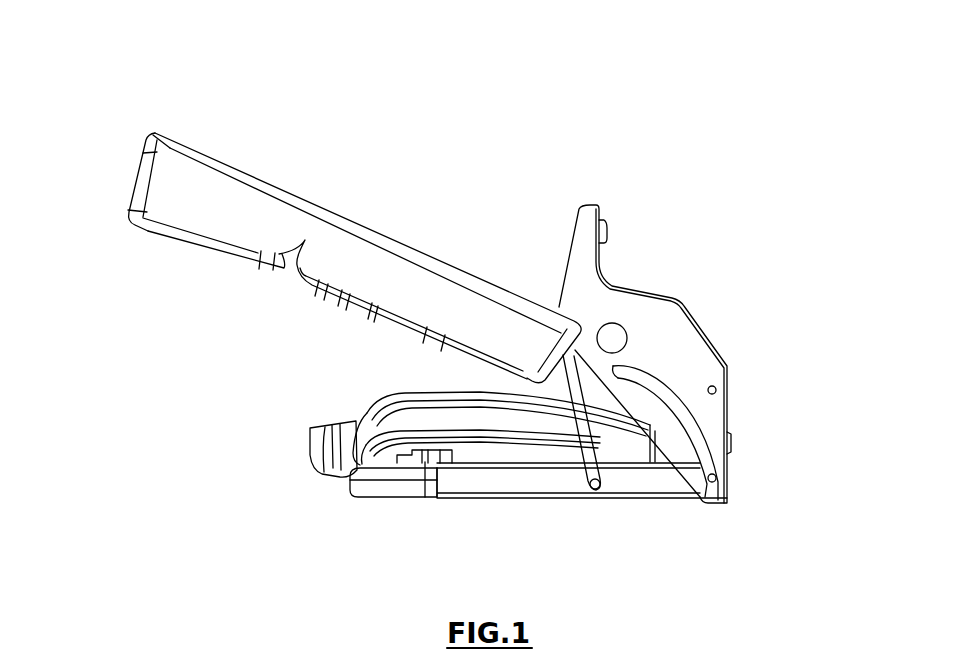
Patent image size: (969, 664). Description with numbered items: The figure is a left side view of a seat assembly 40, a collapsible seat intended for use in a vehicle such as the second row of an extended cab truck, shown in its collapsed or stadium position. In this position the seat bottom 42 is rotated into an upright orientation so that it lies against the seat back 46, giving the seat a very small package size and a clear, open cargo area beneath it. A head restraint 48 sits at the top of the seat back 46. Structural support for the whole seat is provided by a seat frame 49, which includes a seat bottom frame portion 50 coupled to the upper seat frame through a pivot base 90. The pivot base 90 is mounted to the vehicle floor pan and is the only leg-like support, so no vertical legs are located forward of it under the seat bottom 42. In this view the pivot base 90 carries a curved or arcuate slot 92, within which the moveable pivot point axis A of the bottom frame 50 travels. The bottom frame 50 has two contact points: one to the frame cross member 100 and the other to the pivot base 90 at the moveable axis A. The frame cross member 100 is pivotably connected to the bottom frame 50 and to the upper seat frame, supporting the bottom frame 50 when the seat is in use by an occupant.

The seat assembly 40 is at (298, 148).
The seat bottom 42 is at (363, 420).
The seat back 46 is at (378, 227).
The head restraint 48 is at (152, 136).
The seat frame 49 is at (382, 487).
The seat bottom frame portion 50 is at (355, 493).
The pivot base 90 is at (663, 293).
The slot 92 is at (682, 395).
The frame cross member 100 is at (585, 440).
The moveable pivot point axis A is at (713, 493).